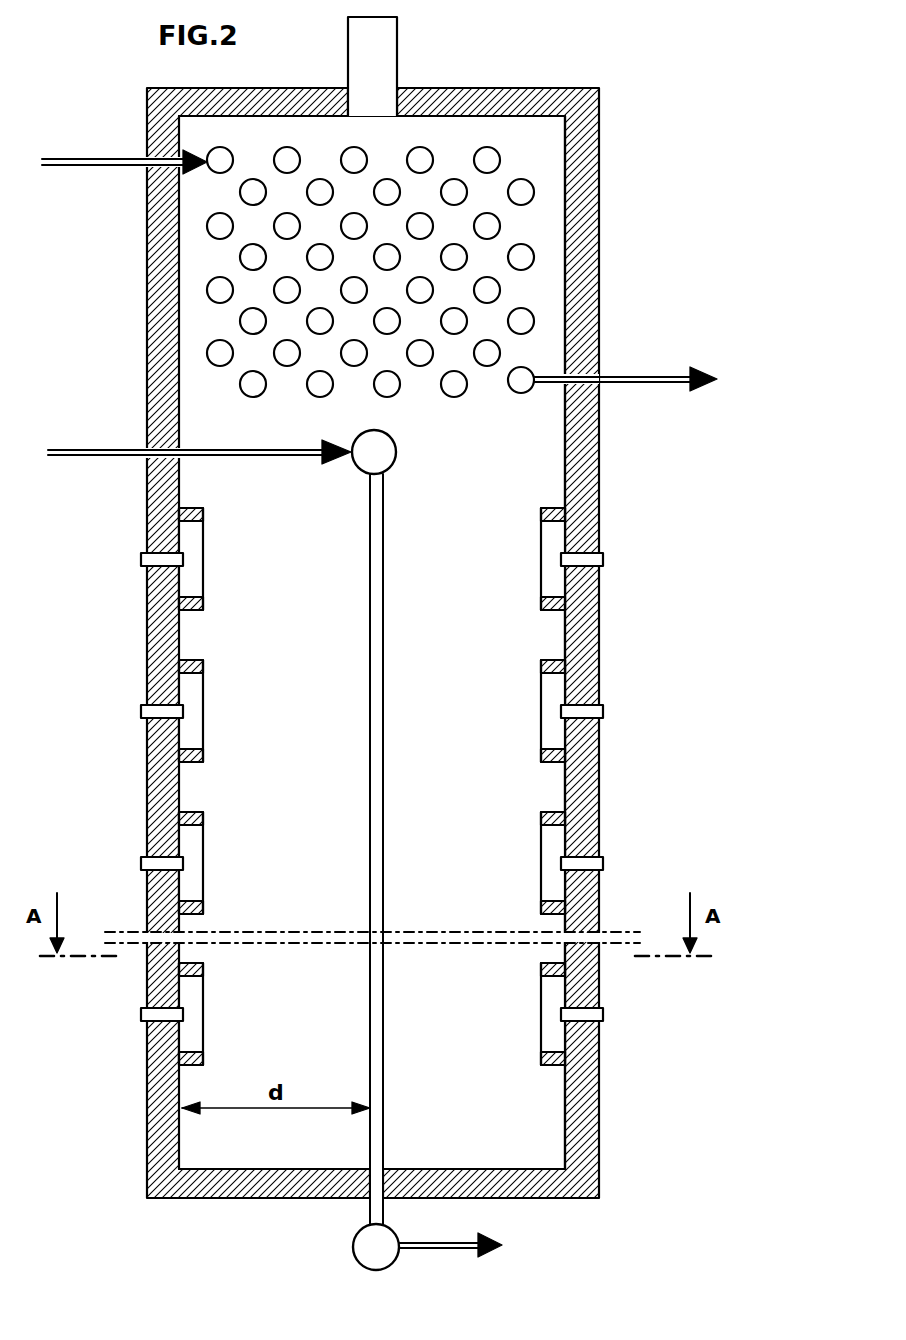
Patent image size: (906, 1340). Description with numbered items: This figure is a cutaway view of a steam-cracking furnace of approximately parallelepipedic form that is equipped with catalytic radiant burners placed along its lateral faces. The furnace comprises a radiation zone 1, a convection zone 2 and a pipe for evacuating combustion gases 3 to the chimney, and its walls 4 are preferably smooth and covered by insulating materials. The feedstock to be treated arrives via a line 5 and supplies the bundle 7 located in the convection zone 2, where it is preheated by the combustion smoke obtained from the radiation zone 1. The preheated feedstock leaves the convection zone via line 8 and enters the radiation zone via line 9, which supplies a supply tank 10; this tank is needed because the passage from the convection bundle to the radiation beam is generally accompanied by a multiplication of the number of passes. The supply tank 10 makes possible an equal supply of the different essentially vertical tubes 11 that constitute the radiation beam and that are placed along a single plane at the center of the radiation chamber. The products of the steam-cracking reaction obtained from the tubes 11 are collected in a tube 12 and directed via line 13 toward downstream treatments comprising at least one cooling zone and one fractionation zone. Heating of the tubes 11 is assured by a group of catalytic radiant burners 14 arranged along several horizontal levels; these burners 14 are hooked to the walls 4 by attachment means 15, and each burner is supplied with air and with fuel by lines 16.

The radiation zone 1 is at (330, 626).
The convection zone 2 is at (518, 225).
The pipe for evacuating combustion gases 3 is at (374, 57).
The walls 4 is at (164, 1135).
The line 5 is at (89, 162).
The bundle 7 is at (490, 163).
The line 8 is at (650, 377).
The line 9 is at (122, 450).
The supply tank 10 is at (385, 455).
The tubes 11 is at (383, 565).
The tube 12 is at (374, 1243).
The line 13 is at (455, 1248).
The catalytic radiant burners 14 is at (535, 565).
The attachment means 15 is at (561, 504).
The lines 16 is at (594, 559).